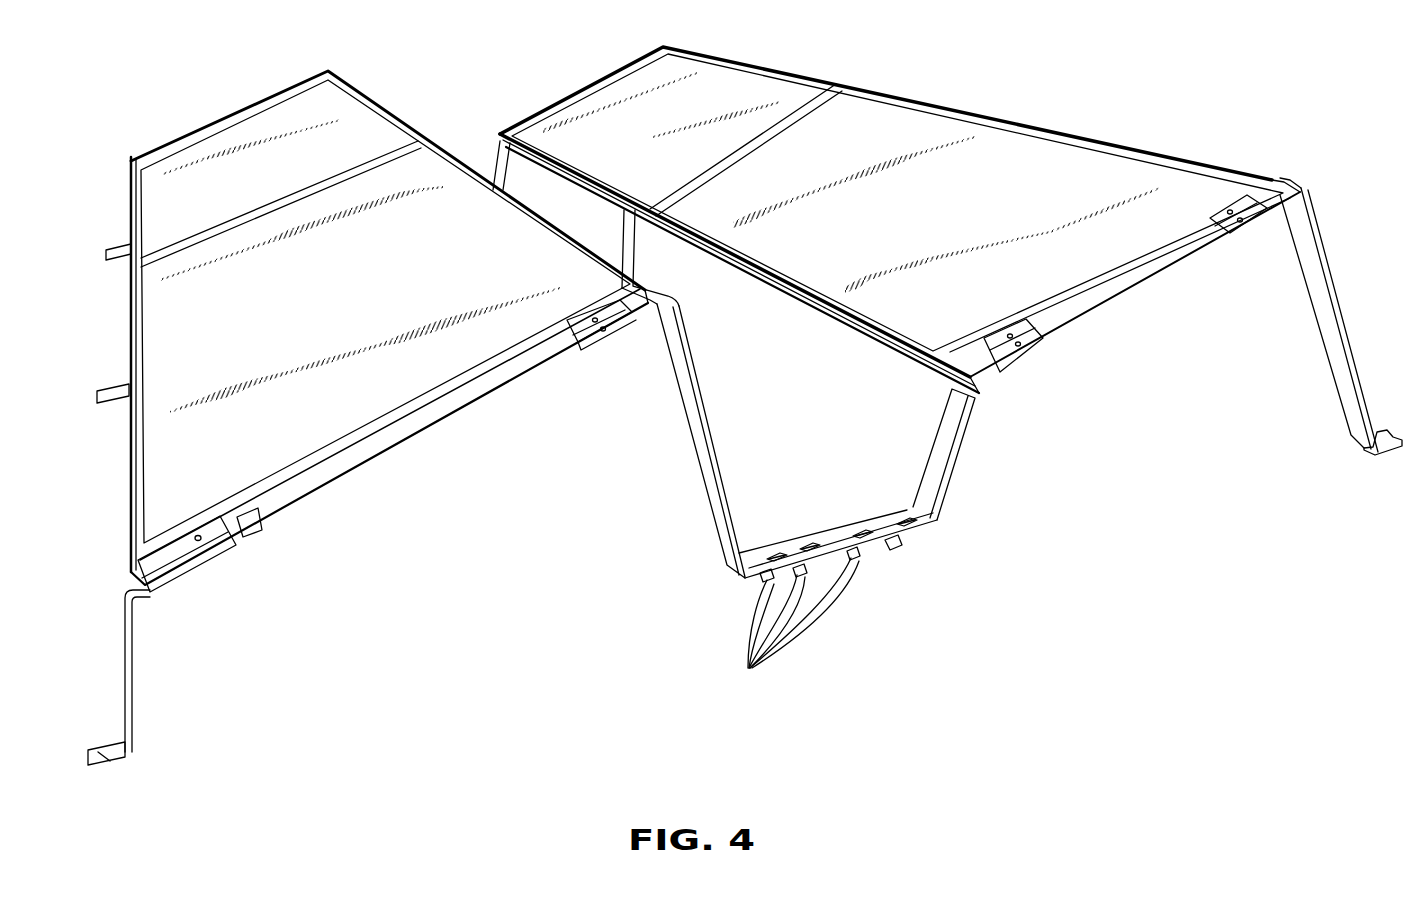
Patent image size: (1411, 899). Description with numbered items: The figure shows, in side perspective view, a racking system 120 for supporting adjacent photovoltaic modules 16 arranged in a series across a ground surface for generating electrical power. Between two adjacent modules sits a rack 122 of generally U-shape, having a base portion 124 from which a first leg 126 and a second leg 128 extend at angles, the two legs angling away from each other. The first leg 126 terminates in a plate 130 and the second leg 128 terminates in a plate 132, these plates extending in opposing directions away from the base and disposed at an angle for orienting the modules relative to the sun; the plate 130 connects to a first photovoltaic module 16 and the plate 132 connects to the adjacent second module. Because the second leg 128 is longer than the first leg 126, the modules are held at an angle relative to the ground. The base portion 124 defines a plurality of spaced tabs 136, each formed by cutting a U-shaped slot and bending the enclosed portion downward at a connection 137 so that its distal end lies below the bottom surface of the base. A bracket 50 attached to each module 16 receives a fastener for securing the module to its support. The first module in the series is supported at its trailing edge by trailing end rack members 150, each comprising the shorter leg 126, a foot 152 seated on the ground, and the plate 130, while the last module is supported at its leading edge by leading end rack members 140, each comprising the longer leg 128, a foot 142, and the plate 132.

The photovoltaic module 16 is at (567, 145).
The bracket 50 is at (570, 325).
The racking system 120 is at (467, 114).
The rack 122 is at (624, 222).
The base portion 124 is at (880, 547).
The first leg 126 is at (132, 676).
The second leg 128 is at (713, 432).
The plate 130 is at (140, 586).
The plate 132 is at (617, 333).
The tabs 136 is at (809, 618).
The connection 137 is at (773, 583).
The leading end rack member 140 is at (1330, 367).
The foot 142 is at (1385, 450).
The trailing end rack member 150 is at (130, 350).
The foot 152 is at (110, 762).